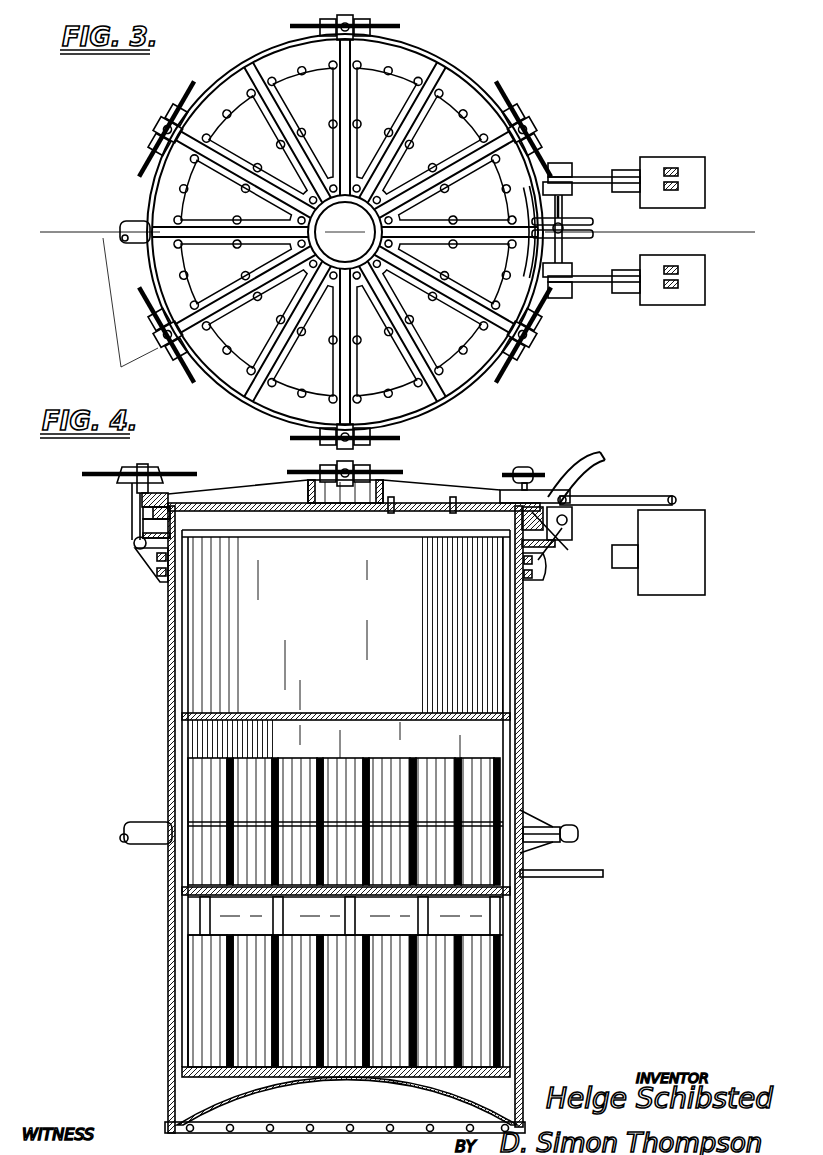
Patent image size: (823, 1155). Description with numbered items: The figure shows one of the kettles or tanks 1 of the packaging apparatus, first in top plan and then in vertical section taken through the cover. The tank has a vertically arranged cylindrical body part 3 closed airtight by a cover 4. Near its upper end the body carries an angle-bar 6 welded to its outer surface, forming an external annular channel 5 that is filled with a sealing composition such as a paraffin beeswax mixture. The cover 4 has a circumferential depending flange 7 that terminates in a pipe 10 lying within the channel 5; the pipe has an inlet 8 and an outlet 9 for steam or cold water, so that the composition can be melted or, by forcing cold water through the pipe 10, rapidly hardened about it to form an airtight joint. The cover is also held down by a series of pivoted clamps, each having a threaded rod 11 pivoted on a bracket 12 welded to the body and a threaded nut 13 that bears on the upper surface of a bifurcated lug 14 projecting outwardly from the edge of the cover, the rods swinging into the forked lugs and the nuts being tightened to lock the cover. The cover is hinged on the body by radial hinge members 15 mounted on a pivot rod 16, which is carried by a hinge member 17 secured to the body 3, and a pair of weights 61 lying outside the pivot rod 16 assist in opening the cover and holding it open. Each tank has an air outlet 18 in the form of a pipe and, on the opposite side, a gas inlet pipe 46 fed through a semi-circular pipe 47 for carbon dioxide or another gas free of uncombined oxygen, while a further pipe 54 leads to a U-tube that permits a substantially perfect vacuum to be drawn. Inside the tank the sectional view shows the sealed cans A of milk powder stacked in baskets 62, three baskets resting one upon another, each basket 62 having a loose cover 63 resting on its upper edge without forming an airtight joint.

In FIG. 3, the kettle or tank 1 is at (440, 128).
In FIG. 4, the kettle or tank 1 is at (428, 522).
In FIG. 4, the cylindrical body part 3 is at (525, 702).
In FIG. 3, the cover 4 is at (518, 96).
In FIG. 4, the annular channel or groove 5 is at (145, 530).
In FIG. 4, the angle-bar 6 is at (143, 517).
In FIG. 4, the circumferential depending flange 7 is at (130, 503).
In FIG. 3, the inlet 8 is at (564, 228).
In FIG. 4, the inlet 8 is at (570, 474).
In FIG. 3, the outlet 9 is at (574, 246).
In FIG. 4, the pipe 10 is at (165, 492).
In FIG. 4, the threaded rod 11 is at (136, 547).
In FIG. 4, the bracket 12 is at (158, 572).
In FIG. 3, the threaded nut 13 is at (172, 126).
In FIG. 4, the threaded nut 13 is at (147, 467).
In FIG. 3, the bifurcated lug 14 is at (525, 126).
In FIG. 4, the bifurcated lug 14 is at (130, 468).
In FIG. 3, the radial hinge member 15 is at (566, 170).
In FIG. 4, the radial hinge member 15 is at (572, 494).
In FIG. 3, the pivot rod 16 is at (562, 256).
In FIG. 4, the pivot rod 16 is at (568, 521).
In FIG. 4, the hinge member 17 is at (558, 549).
In FIG. 3, the air outlet 18 is at (130, 220).
In FIG. 4, the air outlet 18 is at (140, 824).
In FIG. 4, the inlet pipe 46 is at (552, 828).
In FIG. 4, the semi-circular pipe 47 is at (579, 833).
In FIG. 4, the pipe 54 is at (592, 871).
In FIG. 3, the weight 61 is at (652, 160).
In FIG. 4, the weight 61 is at (688, 551).
In FIG. 4, the basket 62 is at (205, 655).
In FIG. 4, the loose cover 63 is at (378, 540).
In FIG. 4, the can or container A is at (300, 842).